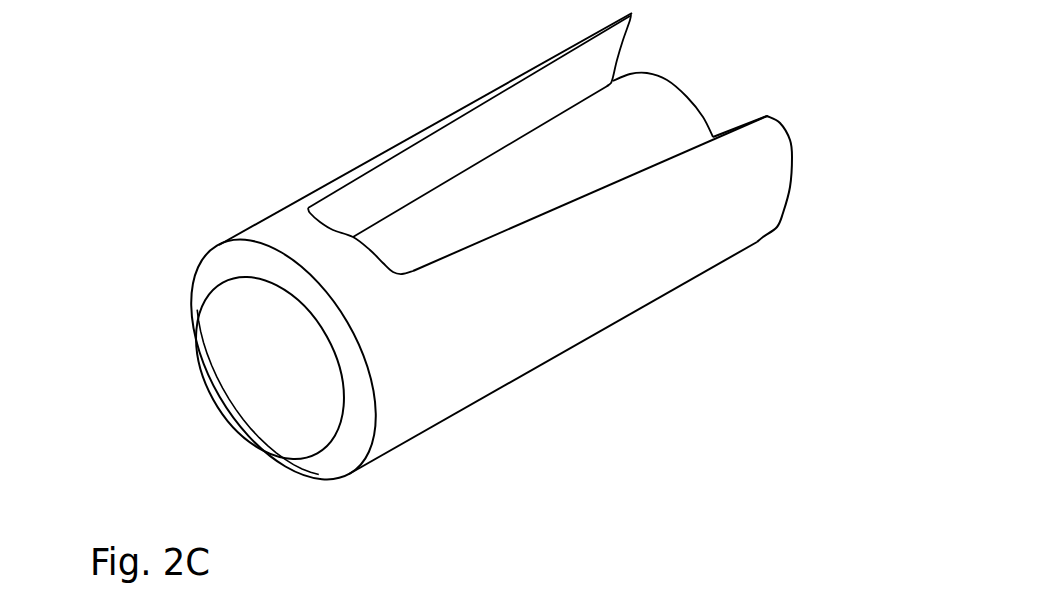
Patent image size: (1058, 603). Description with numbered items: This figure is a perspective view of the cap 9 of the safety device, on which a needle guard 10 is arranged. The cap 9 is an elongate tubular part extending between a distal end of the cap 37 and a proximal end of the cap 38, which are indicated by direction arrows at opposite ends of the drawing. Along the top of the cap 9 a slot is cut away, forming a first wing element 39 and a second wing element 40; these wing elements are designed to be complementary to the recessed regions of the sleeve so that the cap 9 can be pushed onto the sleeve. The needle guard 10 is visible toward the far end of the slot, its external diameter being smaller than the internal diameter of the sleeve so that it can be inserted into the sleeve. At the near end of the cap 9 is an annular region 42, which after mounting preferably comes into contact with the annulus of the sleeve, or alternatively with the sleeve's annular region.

The cap 9 is at (285, 229).
The needle guard 10 is at (670, 112).
The distal end of the cap 37 is at (108, 298).
The proximal end of the cap 38 is at (873, 172).
The first wing element 39 is at (422, 62).
The second wing element 40 is at (708, 320).
The annular region 42 is at (360, 430).